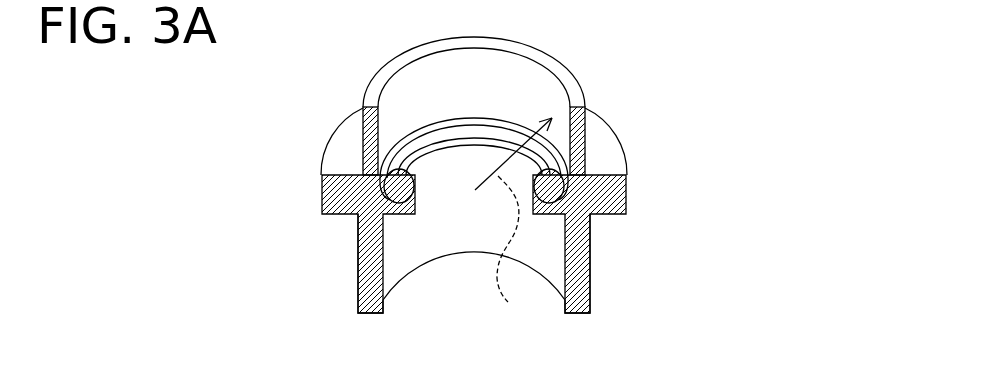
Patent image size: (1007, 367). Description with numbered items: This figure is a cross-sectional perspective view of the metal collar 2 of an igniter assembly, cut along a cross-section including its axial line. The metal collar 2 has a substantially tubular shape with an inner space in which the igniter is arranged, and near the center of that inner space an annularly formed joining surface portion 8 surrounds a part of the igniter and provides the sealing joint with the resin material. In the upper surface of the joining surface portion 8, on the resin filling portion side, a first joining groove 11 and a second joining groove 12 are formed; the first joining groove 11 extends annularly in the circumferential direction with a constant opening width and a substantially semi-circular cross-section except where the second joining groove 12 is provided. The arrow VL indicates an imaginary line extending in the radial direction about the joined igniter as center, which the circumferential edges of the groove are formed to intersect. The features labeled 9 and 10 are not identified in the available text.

The metal collar 2 is at (628, 203).
The joining surface portion 8 is at (413, 203).
The cylindrical leg portion 9 is at (591, 283).
The outer cap 10 is at (588, 142).
The first joining groove 11 is at (367, 148).
The second joining groove 12 is at (413, 173).
The imaginary line VL is at (515, 254).